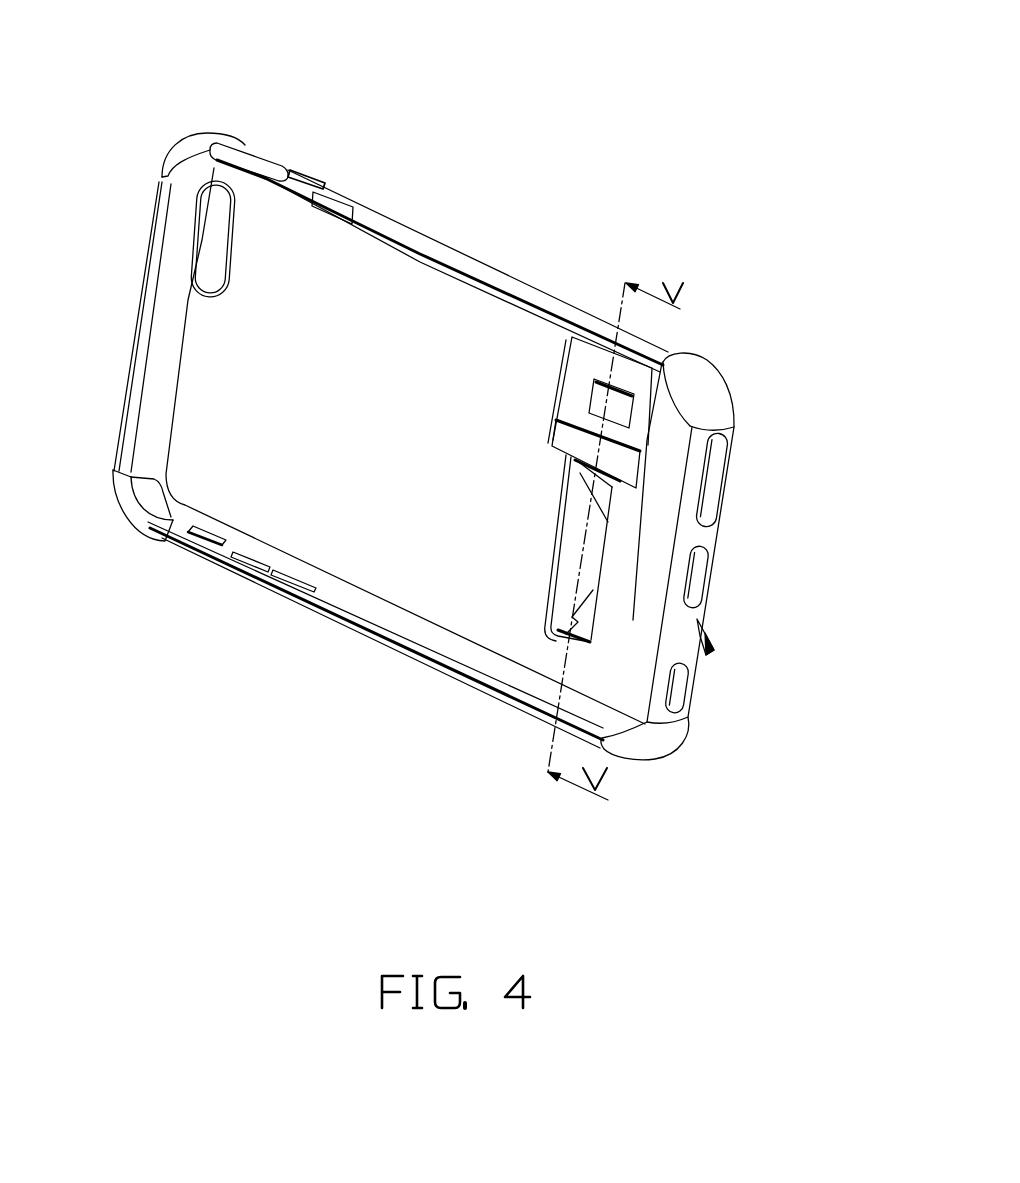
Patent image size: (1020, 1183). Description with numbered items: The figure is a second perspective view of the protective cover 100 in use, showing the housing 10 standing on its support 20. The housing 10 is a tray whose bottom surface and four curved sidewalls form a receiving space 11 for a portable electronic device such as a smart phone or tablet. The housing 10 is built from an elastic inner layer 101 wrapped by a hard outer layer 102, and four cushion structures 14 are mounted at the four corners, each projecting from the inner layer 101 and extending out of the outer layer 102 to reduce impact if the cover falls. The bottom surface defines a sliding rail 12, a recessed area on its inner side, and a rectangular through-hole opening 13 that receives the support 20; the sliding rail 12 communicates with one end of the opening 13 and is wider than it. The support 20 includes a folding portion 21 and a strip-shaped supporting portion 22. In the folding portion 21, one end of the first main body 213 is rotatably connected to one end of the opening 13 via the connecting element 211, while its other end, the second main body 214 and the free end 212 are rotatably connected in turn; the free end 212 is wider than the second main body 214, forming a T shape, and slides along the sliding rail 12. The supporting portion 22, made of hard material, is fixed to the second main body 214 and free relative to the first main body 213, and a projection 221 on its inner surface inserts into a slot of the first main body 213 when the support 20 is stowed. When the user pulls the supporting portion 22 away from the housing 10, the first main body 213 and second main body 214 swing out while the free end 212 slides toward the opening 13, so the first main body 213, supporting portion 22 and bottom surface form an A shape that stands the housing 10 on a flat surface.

The protective cover 100 is at (447, 63).
The housing 10 is at (233, 583).
The receiving space 11 is at (210, 347).
The inner layer 101 is at (390, 240).
The outer layer 102 is at (345, 205).
The sliding rail 12 is at (592, 354).
The opening 13 is at (597, 552).
The cushion structure 14 is at (708, 388).
The support 20 is at (840, 490).
The folding portion 21 is at (793, 453).
The connecting element 211 is at (575, 617).
The free end 212 is at (627, 463).
The first main body 213 is at (590, 607).
The second main body 214 is at (607, 498).
The supporting portion 22 is at (703, 627).
The projection 221 is at (707, 652).